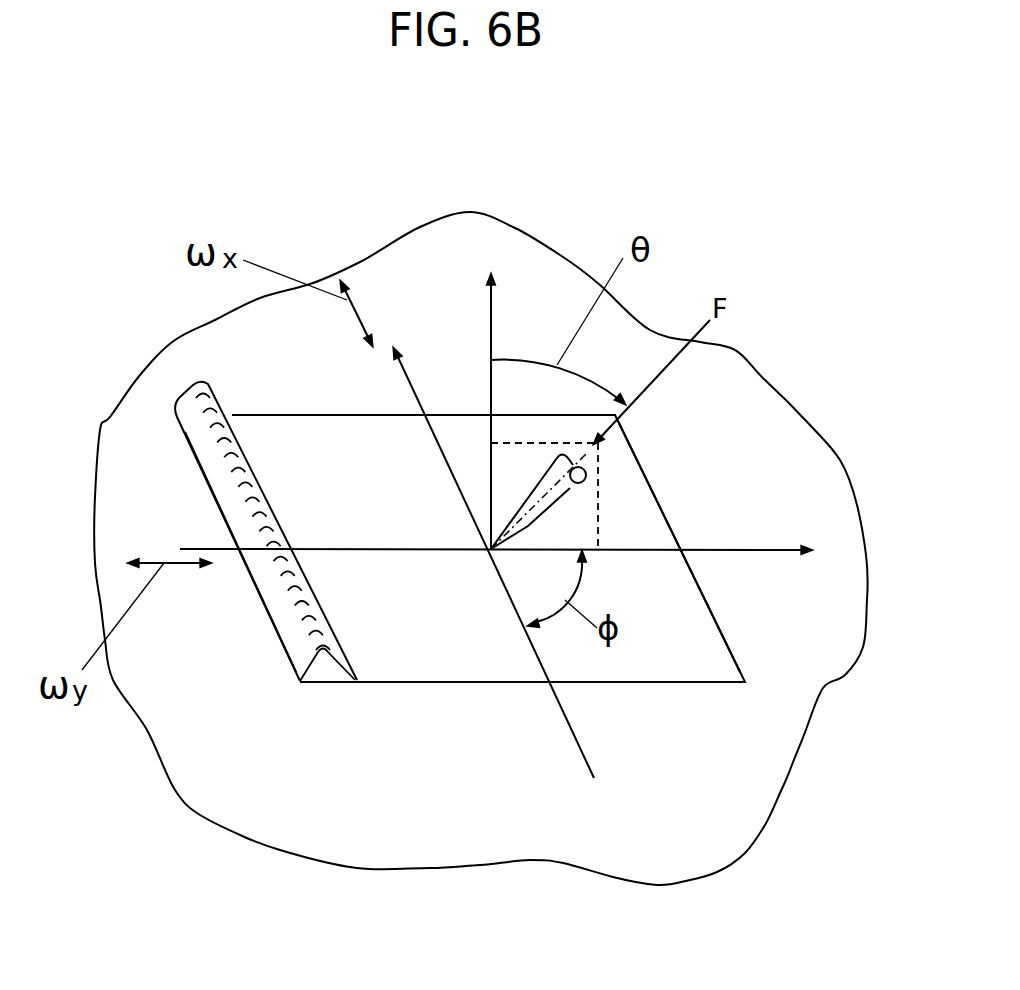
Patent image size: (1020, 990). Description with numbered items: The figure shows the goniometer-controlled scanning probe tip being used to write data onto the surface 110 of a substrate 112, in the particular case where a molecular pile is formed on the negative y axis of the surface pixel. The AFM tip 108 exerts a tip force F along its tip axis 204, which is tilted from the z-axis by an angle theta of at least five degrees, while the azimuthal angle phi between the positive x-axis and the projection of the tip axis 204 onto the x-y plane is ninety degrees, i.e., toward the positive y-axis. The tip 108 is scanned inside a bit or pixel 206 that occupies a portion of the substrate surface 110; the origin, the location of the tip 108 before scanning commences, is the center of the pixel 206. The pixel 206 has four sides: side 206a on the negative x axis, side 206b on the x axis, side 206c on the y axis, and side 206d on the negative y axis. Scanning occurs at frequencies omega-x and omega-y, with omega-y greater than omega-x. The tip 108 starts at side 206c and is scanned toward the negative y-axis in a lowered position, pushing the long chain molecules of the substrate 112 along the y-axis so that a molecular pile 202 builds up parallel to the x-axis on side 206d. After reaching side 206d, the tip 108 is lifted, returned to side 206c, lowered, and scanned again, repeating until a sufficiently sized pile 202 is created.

The AFM tip 108 is at (545, 484).
The substrate surface 110 is at (795, 452).
The substrate 112 is at (678, 189).
The molecular pile 202 is at (335, 635).
The tip axis 204 is at (560, 488).
The pixel 206 is at (707, 655).
The pixel side on negative x axis 206a is at (290, 415).
The pixel side on x axis 206b is at (490, 683).
The pixel side on y axis 206c is at (643, 470).
The pixel side on negative y axis 206d is at (213, 498).